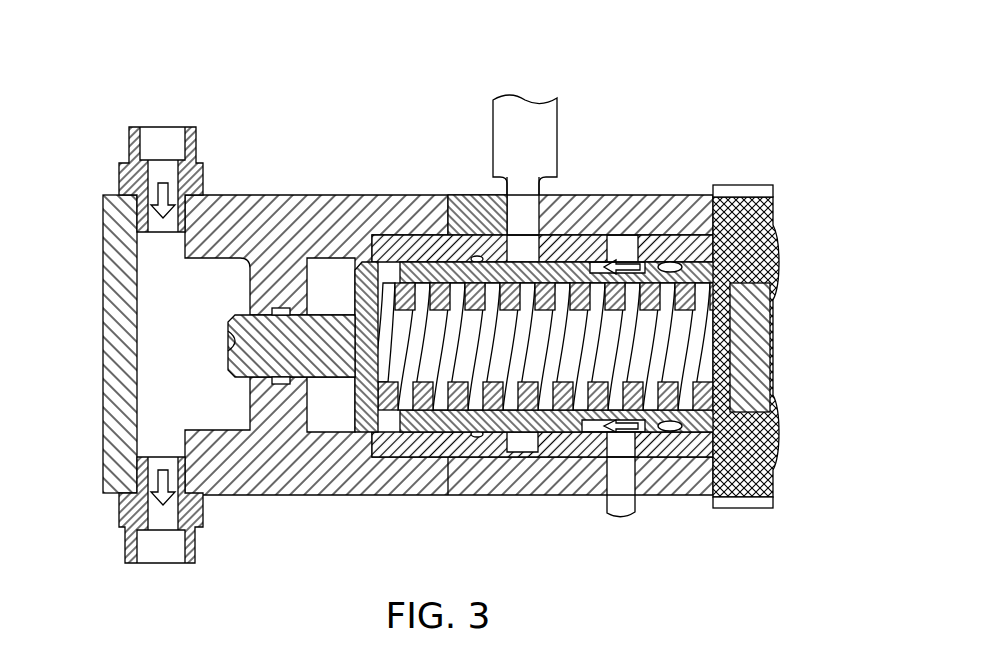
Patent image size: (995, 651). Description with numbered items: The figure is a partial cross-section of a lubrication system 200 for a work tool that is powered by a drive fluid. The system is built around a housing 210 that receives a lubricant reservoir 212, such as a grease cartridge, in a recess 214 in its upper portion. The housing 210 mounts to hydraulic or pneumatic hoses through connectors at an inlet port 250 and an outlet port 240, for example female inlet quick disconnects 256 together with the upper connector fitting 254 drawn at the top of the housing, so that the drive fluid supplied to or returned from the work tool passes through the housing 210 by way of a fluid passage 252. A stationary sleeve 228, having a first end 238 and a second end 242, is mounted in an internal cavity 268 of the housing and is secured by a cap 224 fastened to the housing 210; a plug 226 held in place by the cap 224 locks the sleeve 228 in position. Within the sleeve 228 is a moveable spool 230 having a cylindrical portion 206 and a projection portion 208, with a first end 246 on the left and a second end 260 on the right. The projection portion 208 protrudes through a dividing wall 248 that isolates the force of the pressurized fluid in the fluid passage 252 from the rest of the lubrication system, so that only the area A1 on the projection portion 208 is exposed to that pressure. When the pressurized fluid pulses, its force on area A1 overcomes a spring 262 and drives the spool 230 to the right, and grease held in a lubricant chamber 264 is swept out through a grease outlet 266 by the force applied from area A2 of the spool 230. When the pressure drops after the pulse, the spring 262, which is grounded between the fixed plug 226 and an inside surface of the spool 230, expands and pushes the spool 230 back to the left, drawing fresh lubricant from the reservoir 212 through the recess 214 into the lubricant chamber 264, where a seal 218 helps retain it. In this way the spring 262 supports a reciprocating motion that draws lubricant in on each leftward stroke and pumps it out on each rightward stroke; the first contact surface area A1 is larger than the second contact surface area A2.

The lubrication system 200 is at (352, 80).
The cylindrical portion 206 is at (692, 422).
The projection portion 208 is at (259, 349).
The housing 210 is at (288, 201).
The lubricant reservoir 212 is at (511, 145).
The recess 214 is at (505, 196).
The seal 218 is at (670, 432).
The cap 224 is at (767, 352).
The plug 226 is at (775, 258).
The stationary sleeve 228 is at (385, 240).
The spool 230 is at (288, 355).
The first end 238 is at (417, 230).
The outlet port 240 is at (156, 339).
The second end 242 is at (693, 240).
The first end 246 is at (357, 415).
The dividing wall 248 is at (262, 417).
The inlet port 250 is at (82, 237).
The fluid passage 252 is at (222, 305).
The upper port fitting 254 is at (238, 166).
The female inlet quick disconnects 256 is at (196, 547).
The second end 260 is at (775, 272).
The spring 262 is at (392, 402).
The lubricant chamber 264 is at (587, 270).
The grease outlet 266 is at (612, 520).
The internal cavity 268 is at (315, 295).
The first contact surface area A1 is at (236, 332).
The second contact surface area A2 is at (582, 432).